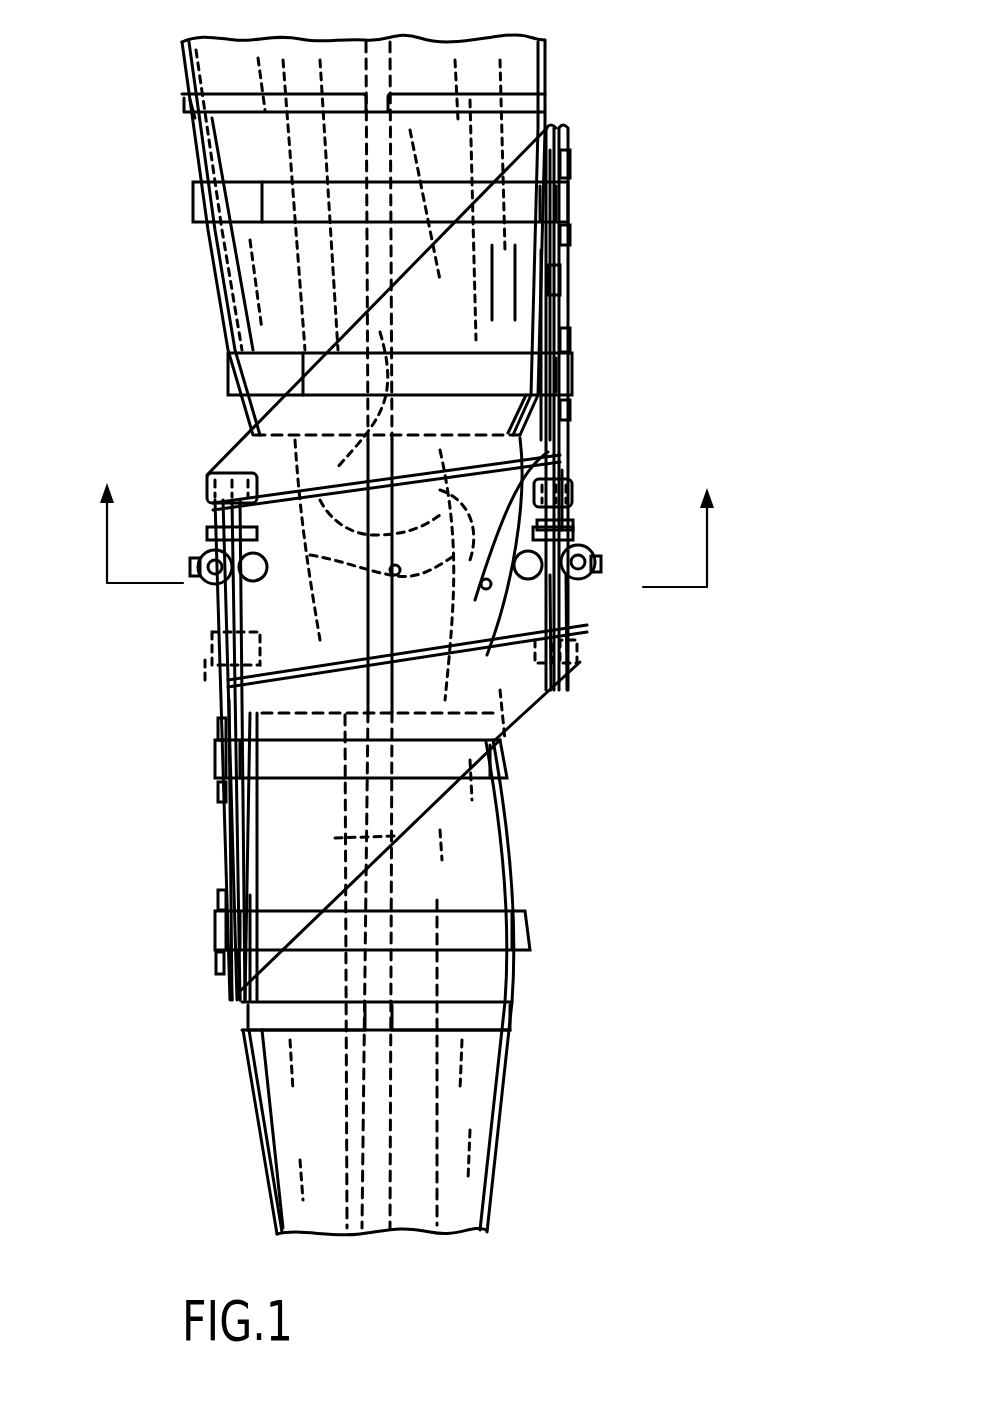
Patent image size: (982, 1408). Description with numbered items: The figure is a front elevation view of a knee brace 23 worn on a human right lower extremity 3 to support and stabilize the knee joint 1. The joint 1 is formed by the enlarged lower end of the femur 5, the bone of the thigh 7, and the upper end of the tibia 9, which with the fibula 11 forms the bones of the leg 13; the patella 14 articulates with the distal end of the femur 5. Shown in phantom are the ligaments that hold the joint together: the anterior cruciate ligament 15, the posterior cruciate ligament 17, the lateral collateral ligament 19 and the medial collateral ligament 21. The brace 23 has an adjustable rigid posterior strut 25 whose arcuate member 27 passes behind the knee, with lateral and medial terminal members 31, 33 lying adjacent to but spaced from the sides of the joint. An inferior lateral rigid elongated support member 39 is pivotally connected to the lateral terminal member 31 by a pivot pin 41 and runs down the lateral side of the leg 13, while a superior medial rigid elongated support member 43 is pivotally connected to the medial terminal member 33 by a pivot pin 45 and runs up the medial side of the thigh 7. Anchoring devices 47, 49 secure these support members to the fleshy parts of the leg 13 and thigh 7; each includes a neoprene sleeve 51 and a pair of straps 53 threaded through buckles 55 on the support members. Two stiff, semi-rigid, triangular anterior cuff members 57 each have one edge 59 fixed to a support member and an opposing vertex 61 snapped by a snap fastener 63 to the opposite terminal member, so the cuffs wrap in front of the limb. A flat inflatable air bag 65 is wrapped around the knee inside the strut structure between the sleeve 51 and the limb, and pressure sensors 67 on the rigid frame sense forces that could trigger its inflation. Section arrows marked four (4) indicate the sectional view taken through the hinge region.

The knee joint 1 is at (480, 614).
The human right lower extremity 3 is at (622, 103).
The section line 4 is at (405, 530).
The femur 5 is at (380, 332).
The thigh 7 is at (518, 76).
The tibia 9 is at (417, 892).
The fibula 11 is at (335, 838).
The leg 13 is at (465, 1110).
The patella 14 is at (332, 492).
The anterior cruciate ligament 15 is at (395, 590).
The posterior cruciate ligament 17 is at (395, 570).
The lateral collateral ligament 19 is at (230, 600).
The medial collateral ligament 21 is at (562, 460).
The knee brace 23 is at (595, 405).
The adjustable rigid posterior strut 25 is at (608, 603).
The arcuate member 27 is at (565, 533).
The lateral terminal member 31 is at (210, 515).
The medial terminal member 33 is at (588, 633).
The inferior lateral rigid elongated support member 39 is at (225, 822).
The pivot pin 41 is at (213, 633).
The superior medial rigid elongated support member 43 is at (557, 280).
The pivot pin 45 is at (580, 497).
The anchoring device 47 is at (200, 962).
The anchoring device 49 is at (605, 196).
The sleeve 51 is at (398, 127).
The straps 53 is at (215, 200).
The buckles 55 is at (568, 162).
The anterior cuff members 57 is at (515, 252).
The edge 59 is at (554, 300).
The vertex 61 is at (215, 480).
The snap fastener 63 is at (205, 485).
The inflatable air bag 65 is at (210, 95).
The pressure sensors 67 is at (205, 545).